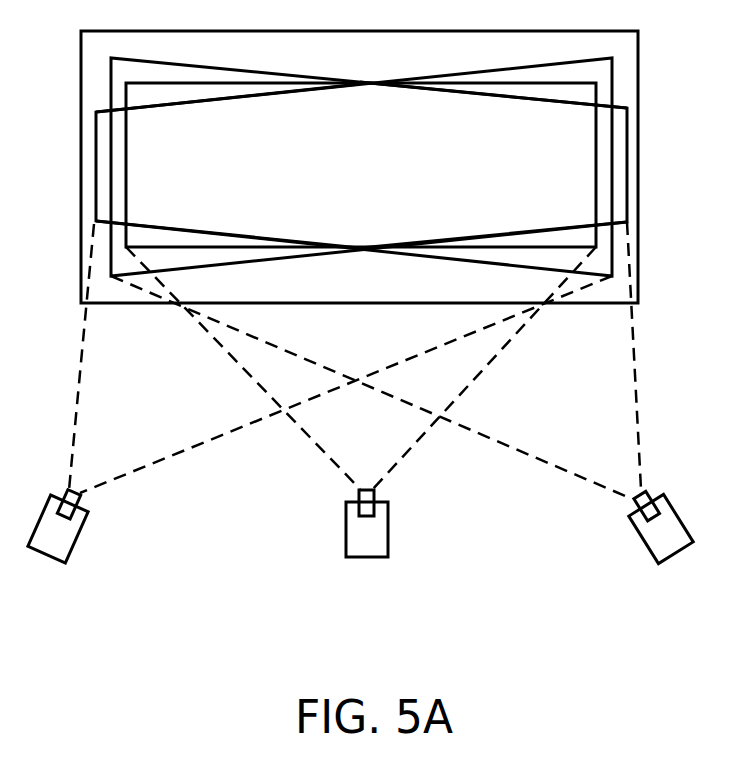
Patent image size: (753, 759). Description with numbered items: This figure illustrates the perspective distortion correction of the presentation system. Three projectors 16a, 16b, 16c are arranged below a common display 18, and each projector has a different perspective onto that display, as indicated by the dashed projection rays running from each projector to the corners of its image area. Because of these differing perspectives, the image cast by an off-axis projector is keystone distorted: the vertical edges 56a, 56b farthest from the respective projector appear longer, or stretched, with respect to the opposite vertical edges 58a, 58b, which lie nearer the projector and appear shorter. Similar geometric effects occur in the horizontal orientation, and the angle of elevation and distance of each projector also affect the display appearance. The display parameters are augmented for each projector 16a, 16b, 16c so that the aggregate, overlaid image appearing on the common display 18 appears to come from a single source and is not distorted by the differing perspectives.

The common display 18 is at (81, 53).
The vertical edge farthest from the projector 56a is at (111, 83).
The vertical edge farthest from the projector 56b is at (612, 73).
The opposite vertical edge 58a is at (96, 175).
The opposite vertical edge 58b is at (627, 155).
The projector 16a is at (52, 560).
The projector 16b is at (370, 557).
The projector 16c is at (670, 562).